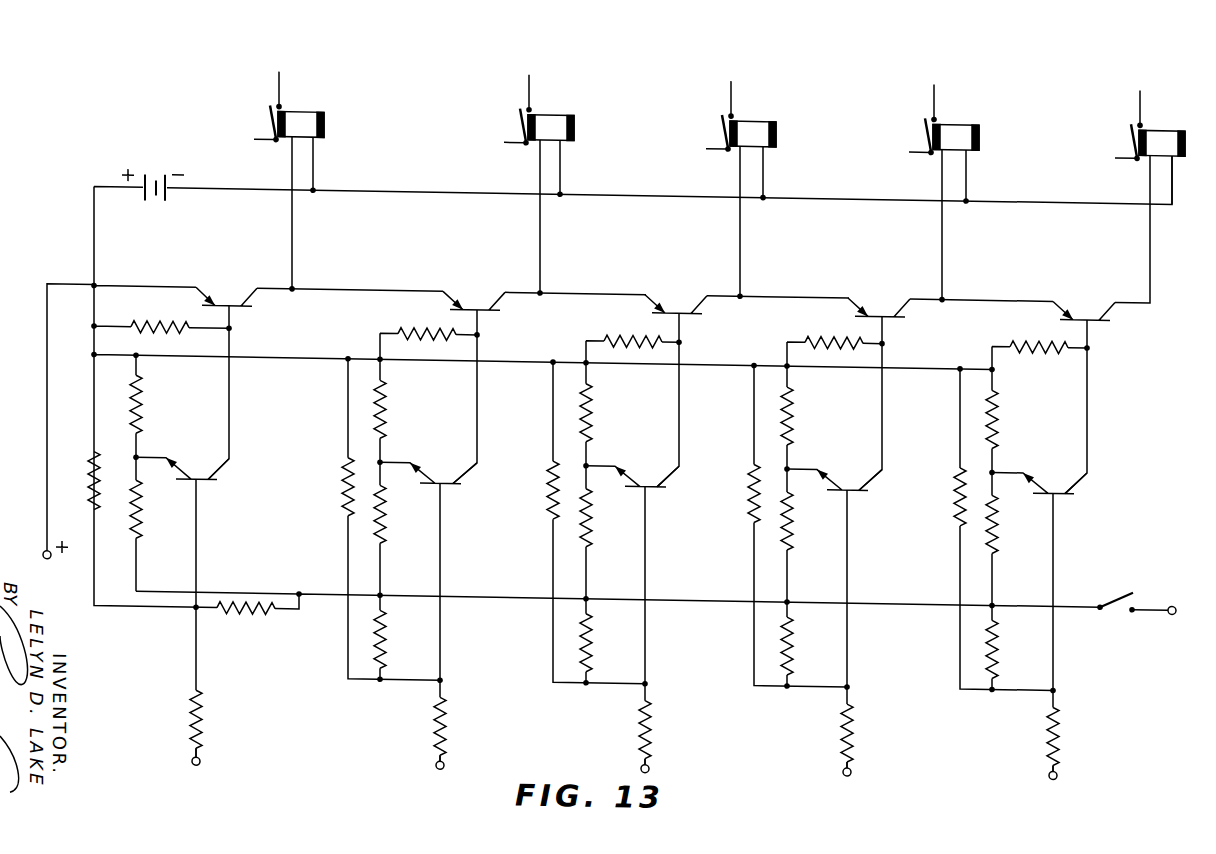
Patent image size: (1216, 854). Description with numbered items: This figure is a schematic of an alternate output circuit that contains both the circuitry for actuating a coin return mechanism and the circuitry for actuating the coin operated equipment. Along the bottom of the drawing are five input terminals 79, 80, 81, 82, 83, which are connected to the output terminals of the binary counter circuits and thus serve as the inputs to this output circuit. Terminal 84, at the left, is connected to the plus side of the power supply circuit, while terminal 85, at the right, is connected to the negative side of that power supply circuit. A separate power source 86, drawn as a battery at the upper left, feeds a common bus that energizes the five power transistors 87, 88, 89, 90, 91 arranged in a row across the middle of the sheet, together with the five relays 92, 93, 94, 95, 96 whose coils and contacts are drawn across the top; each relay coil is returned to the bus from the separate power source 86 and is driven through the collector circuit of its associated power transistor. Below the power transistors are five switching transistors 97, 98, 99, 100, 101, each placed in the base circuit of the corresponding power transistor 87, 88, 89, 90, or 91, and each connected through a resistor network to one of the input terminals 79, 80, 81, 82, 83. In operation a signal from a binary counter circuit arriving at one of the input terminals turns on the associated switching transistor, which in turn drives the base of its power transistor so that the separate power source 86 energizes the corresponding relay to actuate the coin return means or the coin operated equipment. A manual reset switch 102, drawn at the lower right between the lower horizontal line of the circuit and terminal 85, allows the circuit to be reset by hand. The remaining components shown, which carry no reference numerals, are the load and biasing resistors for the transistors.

The input terminal 79 is at (200, 757).
The input terminal 80 is at (436, 757).
The input terminal 81 is at (648, 757).
The input terminal 82 is at (851, 757).
The input terminal 83 is at (1057, 758).
The terminal 84 is at (44, 552).
The terminal 85 is at (1170, 596).
The separate power source 86 is at (143, 172).
The power transistor 87 is at (229, 298).
The power transistor 88 is at (475, 298).
The power transistor 89 is at (684, 300).
The power transistor 90 is at (879, 299).
The power transistor 91 is at (1091, 300).
The relay 92 is at (312, 110).
The relay 93 is at (561, 113).
The relay 94 is at (764, 117).
The relay 95 is at (968, 118).
The relay 96 is at (1174, 120).
The switching transistor 97 is at (204, 478).
The switching transistor 98 is at (446, 480).
The switching transistor 99 is at (656, 480).
The switching transistor 100 is at (859, 480).
The switching transistor 101 is at (1064, 481).
The manual reset switch 102 is at (1113, 581).